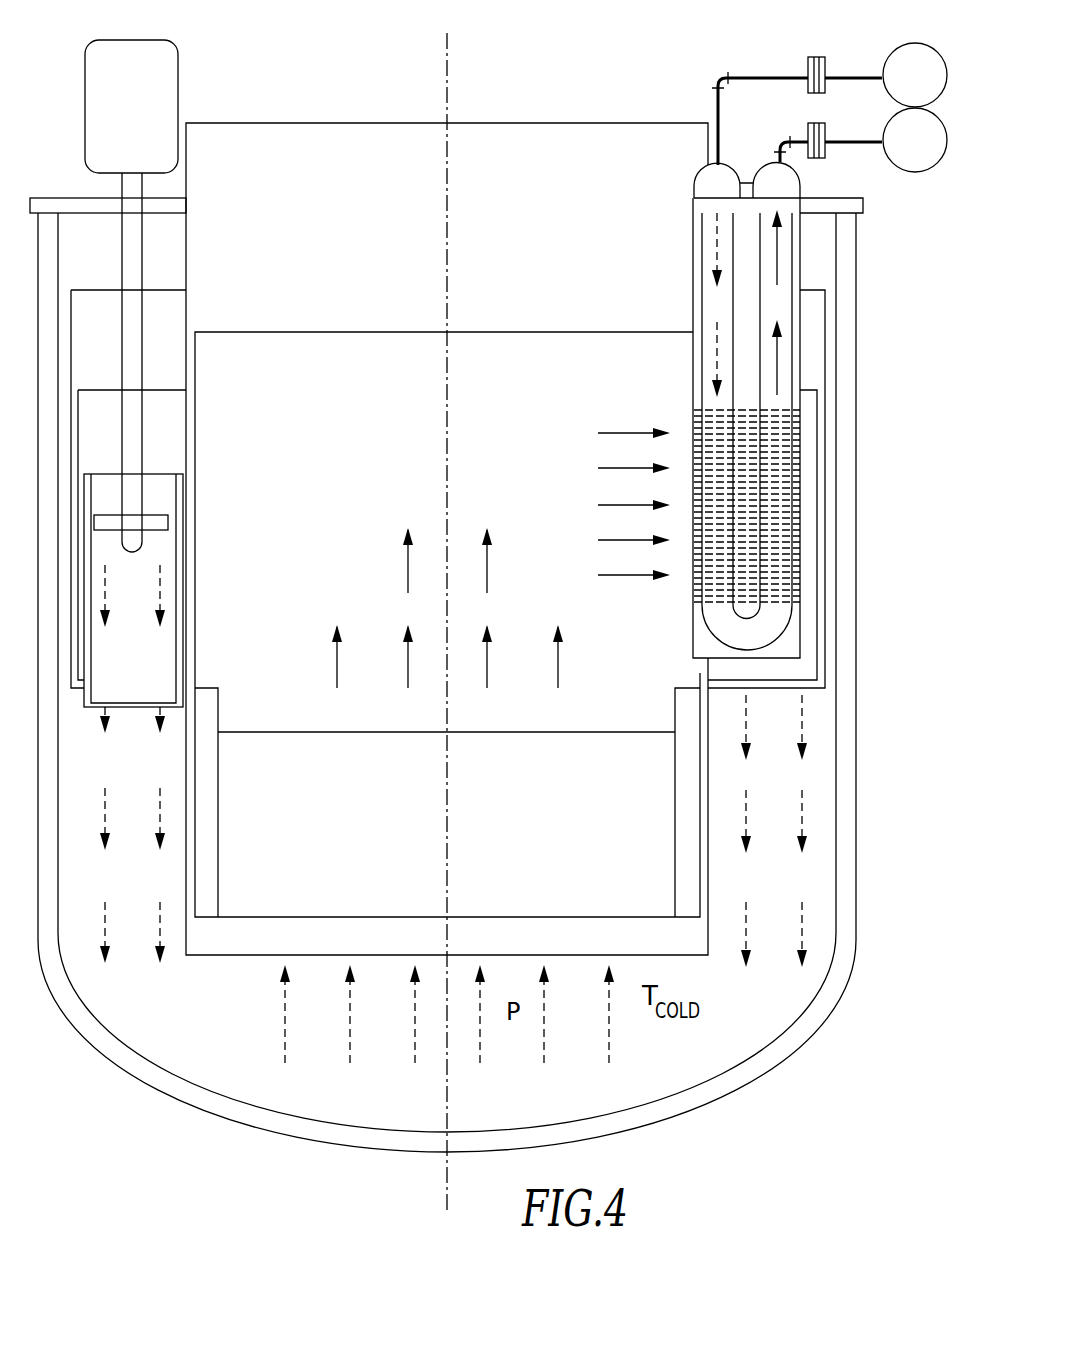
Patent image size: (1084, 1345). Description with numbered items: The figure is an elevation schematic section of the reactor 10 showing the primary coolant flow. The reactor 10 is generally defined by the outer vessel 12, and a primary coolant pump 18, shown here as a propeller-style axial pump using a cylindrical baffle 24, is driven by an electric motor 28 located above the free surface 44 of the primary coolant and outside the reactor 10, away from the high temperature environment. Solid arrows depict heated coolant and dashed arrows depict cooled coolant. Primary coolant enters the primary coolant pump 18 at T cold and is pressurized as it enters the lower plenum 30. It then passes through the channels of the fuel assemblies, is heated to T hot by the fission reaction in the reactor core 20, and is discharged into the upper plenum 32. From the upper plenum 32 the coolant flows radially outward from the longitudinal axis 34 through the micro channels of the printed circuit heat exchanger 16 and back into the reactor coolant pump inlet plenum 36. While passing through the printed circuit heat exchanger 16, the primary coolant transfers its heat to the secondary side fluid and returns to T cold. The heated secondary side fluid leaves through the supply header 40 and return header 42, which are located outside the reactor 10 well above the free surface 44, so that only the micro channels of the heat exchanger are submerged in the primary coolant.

The reactor 10 is at (770, 1097).
The outer vessel 12 is at (850, 758).
The printed circuit heat exchanger 16 is at (802, 334).
The primary coolant pump 18 is at (86, 86).
The reactor core 20 is at (302, 744).
The cylindrical baffle 24 is at (177, 590).
The electric motor 28 is at (152, 76).
The lower plenum 30 is at (192, 1055).
The upper plenum 32 is at (540, 138).
The longitudinal axis 34 is at (448, 75).
The reactor coolant pump inlet plenum 36 is at (164, 435).
The supply header 40 is at (906, 66).
The return header 42 is at (920, 158).
The free surface 44 is at (566, 334).